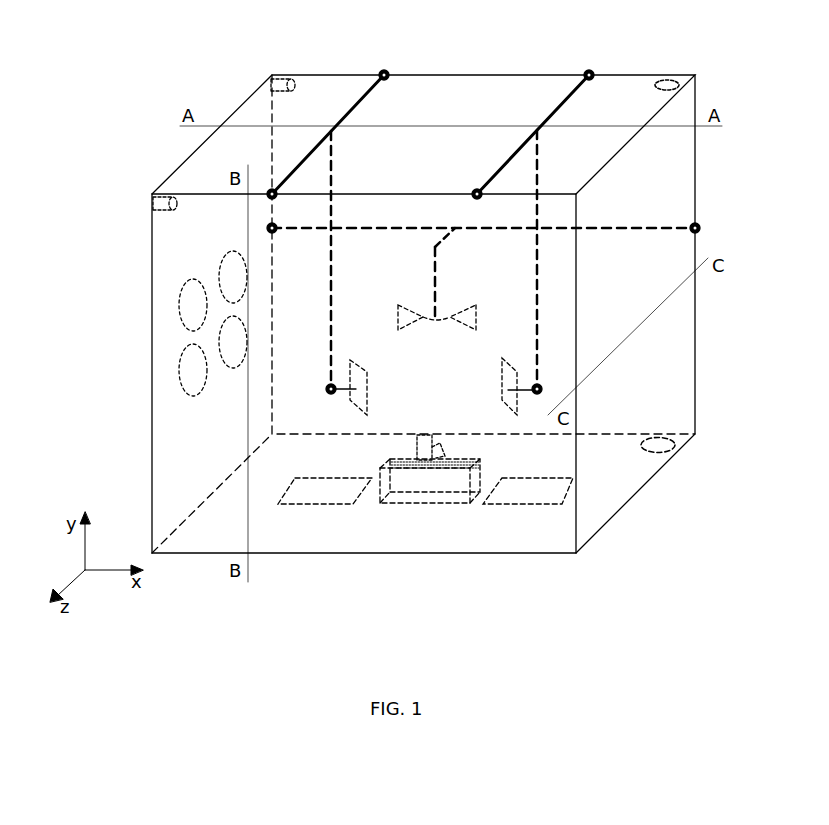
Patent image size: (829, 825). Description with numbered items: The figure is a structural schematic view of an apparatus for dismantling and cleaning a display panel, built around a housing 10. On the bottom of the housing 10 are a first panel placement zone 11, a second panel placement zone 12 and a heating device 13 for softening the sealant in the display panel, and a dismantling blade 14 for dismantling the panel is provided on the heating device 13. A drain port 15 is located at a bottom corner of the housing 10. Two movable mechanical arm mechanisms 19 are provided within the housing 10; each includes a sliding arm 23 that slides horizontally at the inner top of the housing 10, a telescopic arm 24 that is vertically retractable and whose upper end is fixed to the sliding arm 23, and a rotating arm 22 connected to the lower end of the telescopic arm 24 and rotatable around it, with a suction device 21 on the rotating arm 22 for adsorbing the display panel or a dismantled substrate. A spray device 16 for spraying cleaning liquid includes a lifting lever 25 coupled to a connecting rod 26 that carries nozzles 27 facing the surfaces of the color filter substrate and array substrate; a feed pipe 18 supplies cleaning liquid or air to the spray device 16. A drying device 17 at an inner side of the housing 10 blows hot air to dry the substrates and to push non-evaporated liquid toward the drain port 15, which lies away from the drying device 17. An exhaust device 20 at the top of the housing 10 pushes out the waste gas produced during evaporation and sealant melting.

The housing 10 is at (472, 75).
The first panel placement zone 11 is at (290, 503).
The second panel placement zone 12 is at (528, 505).
The heating device 13 is at (428, 505).
The dismantling blade 14 is at (421, 433).
The drain port 15 is at (673, 453).
The spray device 16 is at (440, 283).
The drying device 17 is at (204, 385).
The feed pipe 18 is at (284, 83).
The mechanical arm mechanism 19 is at (538, 172).
The exhaust device 20 is at (672, 80).
The suction device 21 is at (500, 397).
The rotating arm 22 is at (340, 393).
The sliding arm 23 is at (357, 108).
The telescopic arm 24 is at (331, 280).
The lifting lever 25 is at (610, 230).
The connecting rod 26 is at (433, 247).
The nozzle 27 is at (398, 317).